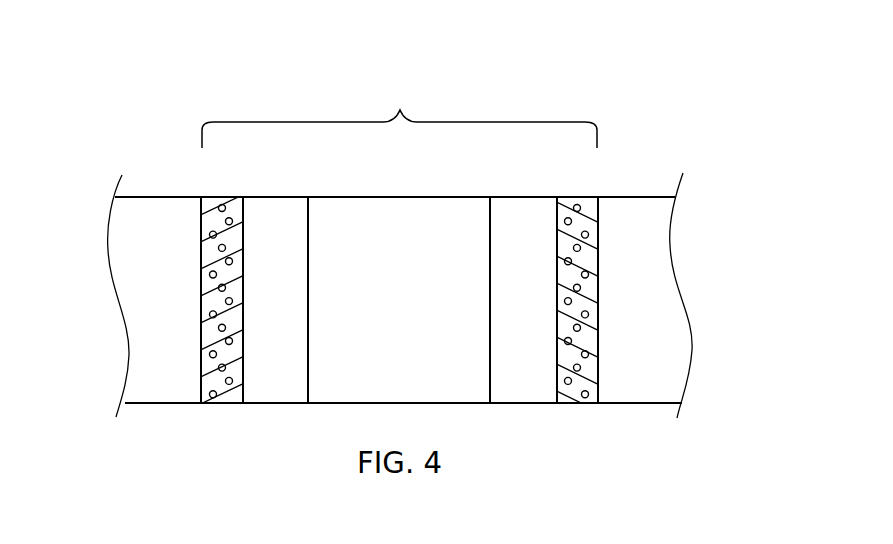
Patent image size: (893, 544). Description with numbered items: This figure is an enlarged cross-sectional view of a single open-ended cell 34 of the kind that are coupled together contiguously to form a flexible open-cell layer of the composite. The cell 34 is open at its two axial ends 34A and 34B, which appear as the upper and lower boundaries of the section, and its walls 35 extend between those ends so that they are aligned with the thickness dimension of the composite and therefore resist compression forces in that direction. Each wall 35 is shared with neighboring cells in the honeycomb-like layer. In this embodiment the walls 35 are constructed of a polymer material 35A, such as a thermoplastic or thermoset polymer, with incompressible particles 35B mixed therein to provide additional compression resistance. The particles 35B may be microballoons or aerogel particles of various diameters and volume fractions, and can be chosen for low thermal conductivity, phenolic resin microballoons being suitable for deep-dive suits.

The open-ended cell 34 is at (400, 109).
The axial end 34A is at (391, 197).
The axial end 34B is at (409, 403).
The walls 35 is at (200, 323).
The polymer material 35A is at (233, 198).
The incompressible particles 35B is at (203, 235).